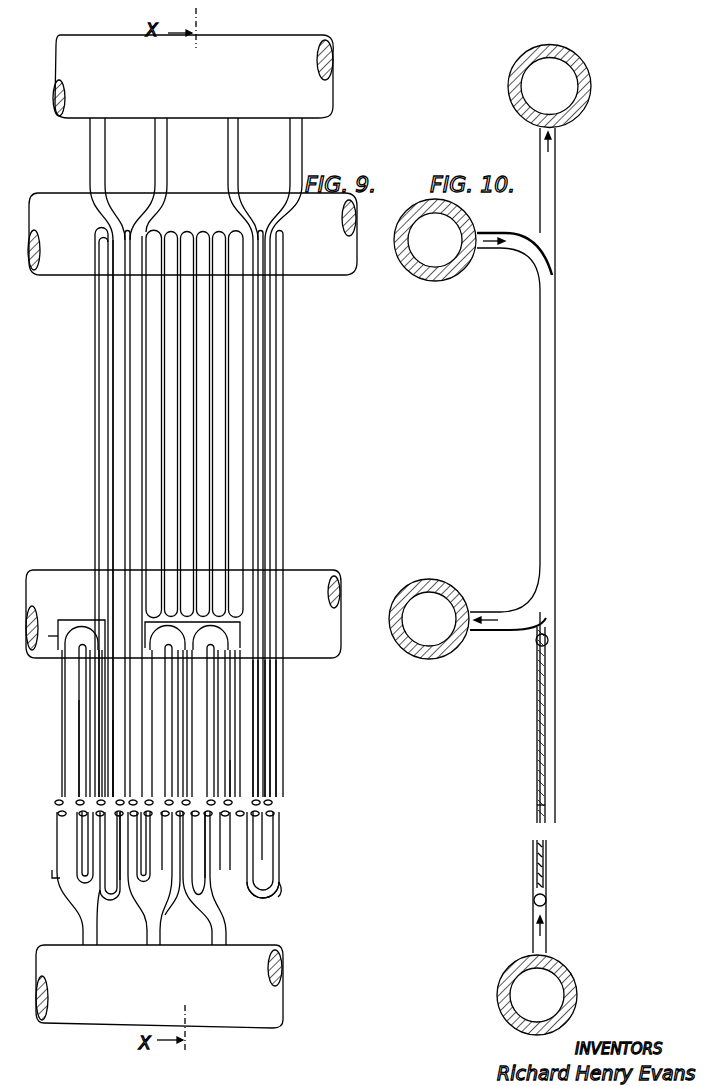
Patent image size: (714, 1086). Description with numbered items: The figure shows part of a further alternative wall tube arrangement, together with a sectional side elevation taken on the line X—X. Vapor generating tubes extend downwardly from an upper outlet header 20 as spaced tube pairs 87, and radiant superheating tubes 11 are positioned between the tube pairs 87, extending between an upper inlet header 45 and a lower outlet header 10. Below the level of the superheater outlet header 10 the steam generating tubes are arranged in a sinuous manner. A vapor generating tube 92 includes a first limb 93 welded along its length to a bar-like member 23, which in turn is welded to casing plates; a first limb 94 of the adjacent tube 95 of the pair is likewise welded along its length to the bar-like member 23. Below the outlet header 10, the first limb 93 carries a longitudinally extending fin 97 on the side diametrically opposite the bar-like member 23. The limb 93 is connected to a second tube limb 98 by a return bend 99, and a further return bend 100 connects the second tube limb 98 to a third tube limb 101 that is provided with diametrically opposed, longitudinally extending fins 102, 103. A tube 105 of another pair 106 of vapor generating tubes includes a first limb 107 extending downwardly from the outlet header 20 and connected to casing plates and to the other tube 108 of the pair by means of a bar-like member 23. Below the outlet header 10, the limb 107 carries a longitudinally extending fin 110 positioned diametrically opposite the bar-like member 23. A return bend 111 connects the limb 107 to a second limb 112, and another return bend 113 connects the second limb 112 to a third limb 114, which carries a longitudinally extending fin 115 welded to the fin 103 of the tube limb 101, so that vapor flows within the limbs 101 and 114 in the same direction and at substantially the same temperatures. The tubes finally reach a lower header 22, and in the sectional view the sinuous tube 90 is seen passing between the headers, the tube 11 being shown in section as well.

In FIG. 9, the upper outlet header 20 is at (283, 52).
In FIG. 10, the upper outlet header 20 is at (586, 70).
In FIG. 9, the lower header 22 is at (263, 1000).
In FIG. 10, the lower header 22 is at (567, 977).
In FIG. 9, the upper inlet header 45 is at (341, 268).
In FIG. 10, the upper inlet header 45 is at (455, 270).
In FIG. 9, the lower outlet header 10 is at (295, 588).
In FIG. 10, the lower outlet header 10 is at (443, 580).
In FIG. 9, the tube pairs 87 is at (163, 155).
In FIG. 9, the bar-like member 23 is at (282, 790).
In FIG. 9, the tube 90 is at (250, 313).
In FIG. 9, the radiant superheating tubes 11 is at (185, 377).
In FIG. 10, the radiant superheating tubes 11 is at (538, 391).
In FIG. 9, the pair 106 is at (138, 378).
In FIG. 9, the tube 105 is at (135, 415).
In FIG. 9, the first limb 107 is at (140, 451).
In FIG. 9, the return bend 100 is at (220, 640).
In FIG. 10, the return bend 100 is at (548, 637).
In FIG. 9, the return bend 113 is at (163, 638).
In FIG. 9, the other tube 108 is at (110, 742).
In FIG. 9, the longitudinally extending fin 110 is at (140, 778).
In FIG. 9, the vapor generating tube 92 is at (243, 685).
In FIG. 9, the first limb 93 is at (246, 714).
In FIG. 9, the first limb 94 is at (270, 735).
In FIG. 9, the adjacent tube 95 is at (268, 752).
In FIG. 9, the longitudinally extending fin 97 is at (240, 771).
In FIG. 9, the second tube limb 98 is at (245, 800).
In FIG. 9, the third tube limb 101 is at (197, 828).
In FIG. 10, the third tube limb 101 is at (547, 807).
In FIG. 9, the longitudinally extending fin 103 is at (185, 848).
In FIG. 10, the longitudinally extending fin 103 is at (543, 737).
In FIG. 9, the second limb 112 is at (133, 815).
In FIG. 9, the longitudinally extending fin 115 is at (163, 838).
In FIG. 9, the third limb 114 is at (177, 858).
In FIG. 9, the return bend 111 is at (140, 898).
In FIG. 9, the longitudinally extending fin 102 is at (214, 905).
In FIG. 9, the return bend 99 is at (238, 900).